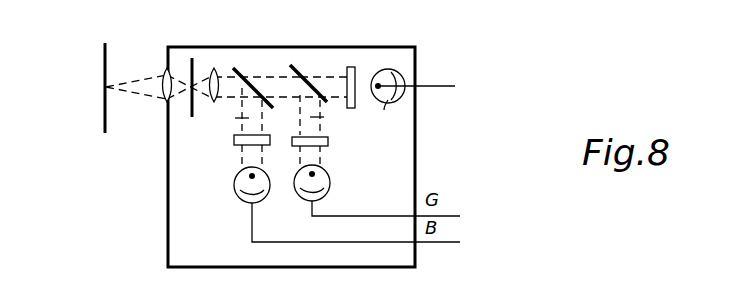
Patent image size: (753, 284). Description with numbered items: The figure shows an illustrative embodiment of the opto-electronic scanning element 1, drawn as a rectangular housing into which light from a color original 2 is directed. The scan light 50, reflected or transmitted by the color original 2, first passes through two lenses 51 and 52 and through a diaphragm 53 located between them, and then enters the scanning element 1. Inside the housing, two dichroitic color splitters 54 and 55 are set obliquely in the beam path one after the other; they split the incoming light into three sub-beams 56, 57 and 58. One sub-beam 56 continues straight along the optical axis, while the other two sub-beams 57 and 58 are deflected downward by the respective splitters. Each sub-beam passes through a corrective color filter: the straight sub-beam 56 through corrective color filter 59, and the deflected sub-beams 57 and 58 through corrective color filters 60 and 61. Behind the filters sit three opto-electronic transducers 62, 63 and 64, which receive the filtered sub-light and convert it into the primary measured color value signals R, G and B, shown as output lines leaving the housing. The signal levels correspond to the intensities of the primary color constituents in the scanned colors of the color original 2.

The opto-electronic scanning element 1 is at (168, 213).
The color original 2 is at (106, 113).
The scan light 50 is at (145, 80).
The lens 51 is at (168, 68).
The lens 52 is at (216, 68).
The diaphragm 53 is at (193, 64).
The dichroitic color splitter 54 is at (264, 78).
The dichroitic color splitter 55 is at (313, 78).
The sub-beam 56 is at (333, 82).
The sub-beam 57 is at (317, 115).
The sub-beam 58 is at (243, 115).
The corrective color filter 59 is at (353, 71).
The corrective color filter 60 is at (322, 141).
The corrective color filter 61 is at (236, 143).
The opto-electronic transducer 62 is at (384, 110).
The opto-electronic transducer 63 is at (302, 198).
The opto-electronic transducer 64 is at (242, 190).